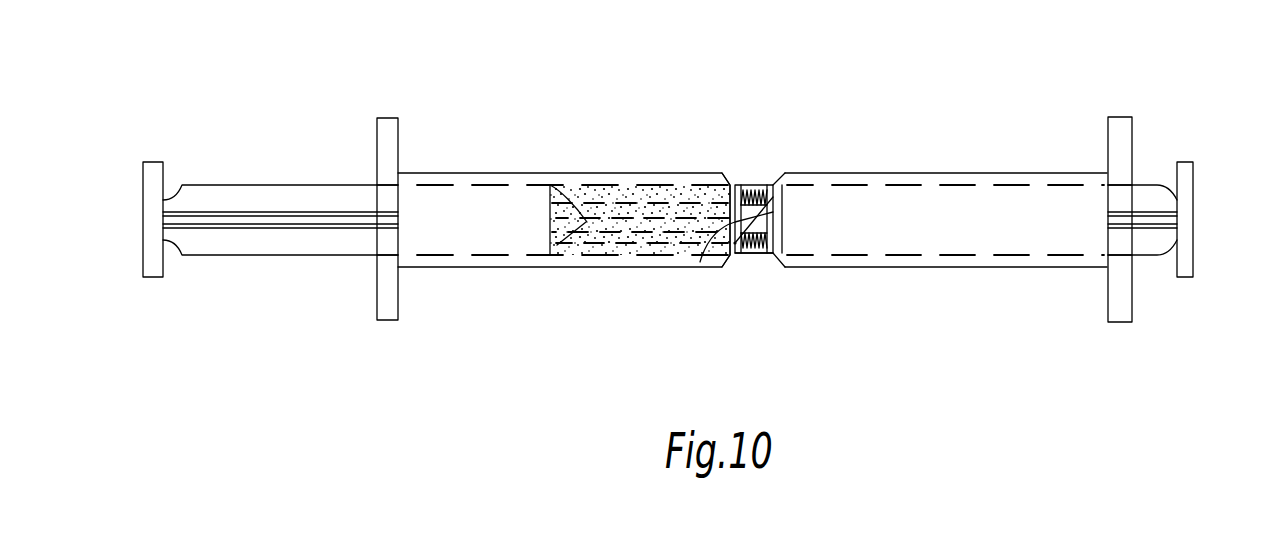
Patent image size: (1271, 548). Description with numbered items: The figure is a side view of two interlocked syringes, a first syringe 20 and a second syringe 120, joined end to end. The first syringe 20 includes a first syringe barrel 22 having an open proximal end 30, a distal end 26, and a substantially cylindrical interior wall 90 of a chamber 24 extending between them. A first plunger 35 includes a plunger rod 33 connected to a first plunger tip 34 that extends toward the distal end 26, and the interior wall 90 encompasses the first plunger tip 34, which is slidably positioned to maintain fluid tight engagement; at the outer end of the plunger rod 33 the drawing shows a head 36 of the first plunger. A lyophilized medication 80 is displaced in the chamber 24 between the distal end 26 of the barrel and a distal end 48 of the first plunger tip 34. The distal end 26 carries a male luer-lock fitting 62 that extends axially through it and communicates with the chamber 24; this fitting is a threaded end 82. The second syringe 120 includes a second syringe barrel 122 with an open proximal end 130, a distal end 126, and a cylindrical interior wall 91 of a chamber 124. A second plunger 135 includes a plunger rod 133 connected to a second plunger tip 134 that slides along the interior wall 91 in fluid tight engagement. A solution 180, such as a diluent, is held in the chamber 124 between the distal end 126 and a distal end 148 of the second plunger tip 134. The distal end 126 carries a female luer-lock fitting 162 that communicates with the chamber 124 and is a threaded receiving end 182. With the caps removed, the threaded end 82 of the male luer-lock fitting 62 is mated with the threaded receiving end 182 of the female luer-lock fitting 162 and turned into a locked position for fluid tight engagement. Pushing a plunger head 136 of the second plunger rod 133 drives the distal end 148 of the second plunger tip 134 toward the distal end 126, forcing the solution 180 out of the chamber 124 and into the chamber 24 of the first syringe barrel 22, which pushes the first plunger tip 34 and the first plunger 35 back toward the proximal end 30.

The first syringe 20 is at (1142, 97).
The first syringe barrel 22 is at (956, 268).
The chamber 24 is at (873, 190).
The distal end 26 is at (722, 262).
The open proximal end 30 is at (1120, 312).
The plunger rod 33 is at (1147, 185).
The first plunger tip 34 is at (772, 255).
The first plunger 35 is at (1139, 282).
The thumb rest 36 is at (1190, 225).
The distal end of the first plunger tip 48 is at (735, 243).
The male luer-lock fitting 62 is at (745, 185).
The lyophilized medication 80 is at (631, 277).
The threaded end 82 is at (714, 187).
The cylindrical interior wall 90 is at (928, 190).
The cylindrical interior wall 91 is at (497, 192).
The second syringe 120 is at (362, 97).
The second syringe barrel 122 is at (466, 268).
The chamber 124 is at (606, 193).
The distal end 126 is at (773, 212).
The open proximal end 130 is at (384, 312).
The plunger rod 133 is at (344, 185).
The second plunger tip 134 is at (557, 245).
The second plunger 135 is at (312, 283).
The plunger head 136 is at (150, 224).
The distal end of the second plunger tip 148 is at (587, 222).
The female luer-lock fitting 162 is at (750, 255).
The solution 180 is at (620, 225).
The threaded receiving end 182 is at (757, 185).